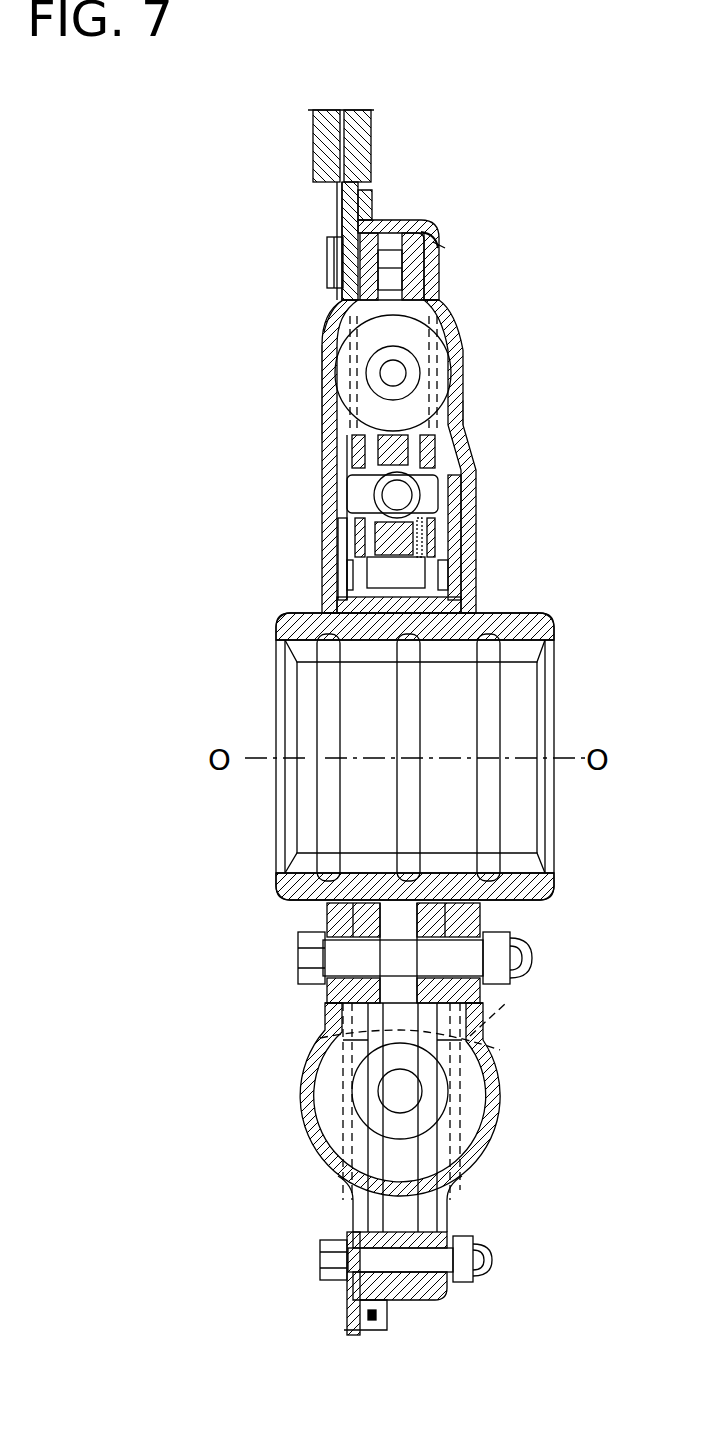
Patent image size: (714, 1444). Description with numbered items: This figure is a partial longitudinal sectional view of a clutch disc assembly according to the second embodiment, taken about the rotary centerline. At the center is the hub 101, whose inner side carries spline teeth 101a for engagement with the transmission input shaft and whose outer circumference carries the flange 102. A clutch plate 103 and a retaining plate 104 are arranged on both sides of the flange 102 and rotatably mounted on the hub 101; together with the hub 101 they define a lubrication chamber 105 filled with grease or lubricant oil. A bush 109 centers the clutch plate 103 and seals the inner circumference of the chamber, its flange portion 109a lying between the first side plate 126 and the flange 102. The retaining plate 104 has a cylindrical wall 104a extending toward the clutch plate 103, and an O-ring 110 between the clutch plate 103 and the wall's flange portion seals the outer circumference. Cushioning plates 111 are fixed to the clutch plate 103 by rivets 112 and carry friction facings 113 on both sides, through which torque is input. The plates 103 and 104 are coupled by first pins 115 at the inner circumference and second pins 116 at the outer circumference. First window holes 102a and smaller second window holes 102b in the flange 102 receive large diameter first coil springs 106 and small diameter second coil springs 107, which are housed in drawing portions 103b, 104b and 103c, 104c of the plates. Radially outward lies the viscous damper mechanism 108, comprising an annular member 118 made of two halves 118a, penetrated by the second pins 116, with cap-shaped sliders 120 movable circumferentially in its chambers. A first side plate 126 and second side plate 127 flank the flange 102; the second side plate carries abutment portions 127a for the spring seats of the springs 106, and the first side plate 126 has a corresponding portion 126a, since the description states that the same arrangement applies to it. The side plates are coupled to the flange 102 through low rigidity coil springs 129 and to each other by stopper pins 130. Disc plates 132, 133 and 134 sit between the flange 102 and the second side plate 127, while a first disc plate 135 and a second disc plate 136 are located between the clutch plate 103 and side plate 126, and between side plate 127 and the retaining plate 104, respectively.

The hub 101 is at (522, 613).
The spline teeth 101a is at (514, 652).
The flange 102 is at (438, 492).
The first window holes 102a is at (432, 1214).
The second window holes 102b is at (342, 304).
The clutch plate 103 is at (332, 442).
The drawing portion 103b is at (312, 1128).
The drawing portion 103c is at (326, 368).
The retaining plate 104 is at (466, 511).
The cylindrical wall 104a is at (385, 222).
The drawing portion 104b is at (470, 1110).
The drawing portion 104c is at (452, 364).
The lubrication chamber 105 is at (350, 452).
The first coil springs 106 is at (440, 1086).
The second coil springs 107 is at (415, 350).
The viscous damper mechanism 108 is at (445, 248).
The bush 109 is at (338, 604).
The flange portion 109a is at (332, 1003).
The O-ring 110 is at (368, 192).
The cushioning plates 111 is at (340, 198).
The rivets 112 is at (328, 252).
The friction facings 113 is at (320, 144).
The first pins 115 is at (298, 960).
The second pins 116 is at (322, 1262).
The annular member 118 is at (414, 276).
The halves 118a is at (352, 1302).
The sliders 120 is at (439, 218).
The first side plate 126 is at (354, 468).
The lower spacer 126a is at (297, 1042).
The second side plate 127 is at (408, 448).
The abutment portions 127a is at (505, 1022).
The low rigidity coil springs 129 is at (386, 546).
The stopper pins 130 is at (374, 494).
The disc plate 132 is at (410, 905).
The disc plate 133 is at (422, 908).
The disc plate 134 is at (436, 908).
The first disc plate 135 is at (330, 922).
The second disc plate 136 is at (472, 918).